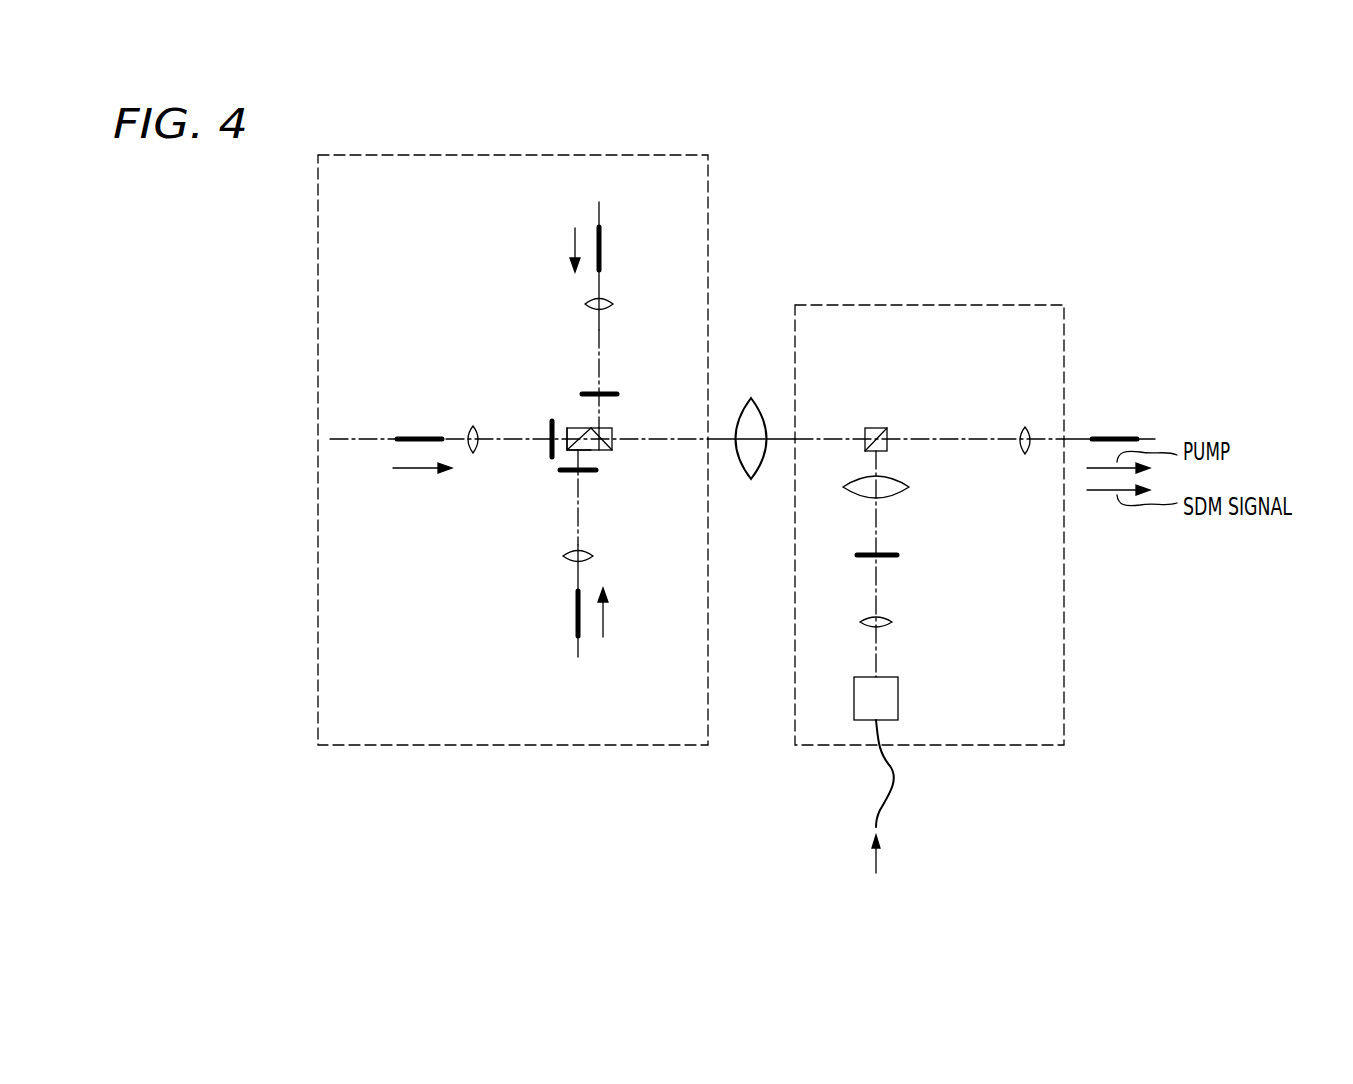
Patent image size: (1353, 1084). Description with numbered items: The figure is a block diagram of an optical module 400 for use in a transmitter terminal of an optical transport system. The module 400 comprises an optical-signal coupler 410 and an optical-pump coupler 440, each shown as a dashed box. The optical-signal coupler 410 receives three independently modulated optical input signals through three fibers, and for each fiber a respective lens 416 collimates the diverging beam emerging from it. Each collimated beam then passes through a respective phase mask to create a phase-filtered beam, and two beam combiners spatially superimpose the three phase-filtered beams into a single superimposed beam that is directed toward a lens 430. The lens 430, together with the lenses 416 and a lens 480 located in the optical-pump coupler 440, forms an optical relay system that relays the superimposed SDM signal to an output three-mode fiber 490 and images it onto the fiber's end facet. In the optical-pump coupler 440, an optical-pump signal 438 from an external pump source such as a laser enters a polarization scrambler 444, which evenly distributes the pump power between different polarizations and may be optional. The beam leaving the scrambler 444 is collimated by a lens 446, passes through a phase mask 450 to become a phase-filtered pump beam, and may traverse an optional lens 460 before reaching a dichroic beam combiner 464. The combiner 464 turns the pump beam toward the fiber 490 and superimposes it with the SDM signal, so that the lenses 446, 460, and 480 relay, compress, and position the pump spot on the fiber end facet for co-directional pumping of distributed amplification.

The optical module 400 is at (200, 202).
The optical-signal coupler 410 is at (458, 155).
The lens 416 is at (616, 304).
The lens 430 is at (751, 479).
The optical-pump coupler 440 is at (920, 305).
The polarization scrambler 444 is at (898, 700).
The lens 446 is at (892, 622).
The phase mask 450 is at (897, 556).
The lens 460 is at (909, 487).
The dichroic beam combiner 464 is at (878, 428).
The lens 480 is at (1025, 427).
The 3M fiber 490 is at (1094, 436).
The optical-pump signal 438 is at (878, 862).